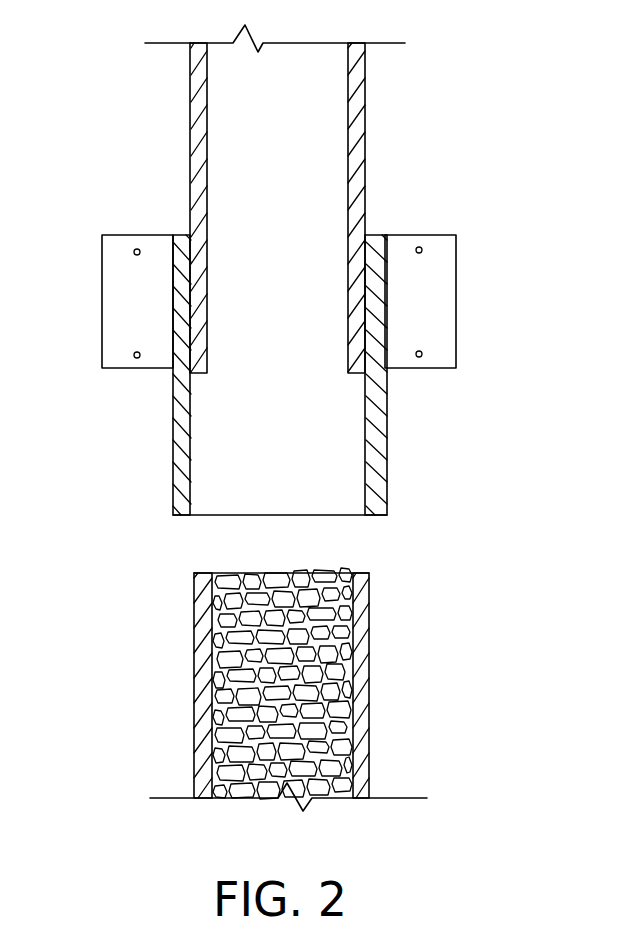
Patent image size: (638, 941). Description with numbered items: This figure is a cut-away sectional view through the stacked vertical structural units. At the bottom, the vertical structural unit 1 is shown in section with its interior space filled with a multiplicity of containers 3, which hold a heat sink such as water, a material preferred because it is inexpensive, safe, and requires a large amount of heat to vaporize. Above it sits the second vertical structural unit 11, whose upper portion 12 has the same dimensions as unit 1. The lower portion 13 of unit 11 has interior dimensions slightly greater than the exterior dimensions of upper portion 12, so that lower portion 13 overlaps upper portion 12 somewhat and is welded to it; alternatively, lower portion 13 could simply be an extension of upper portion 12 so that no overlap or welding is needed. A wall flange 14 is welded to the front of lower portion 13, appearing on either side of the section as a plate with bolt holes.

The vertical structural unit 1 is at (373, 590).
The containers 3 is at (237, 593).
The second vertical structural unit 11 is at (189, 101).
The upper portion 12 is at (365, 173).
The lower portion 13 is at (388, 467).
The wall flange 14 is at (102, 325).